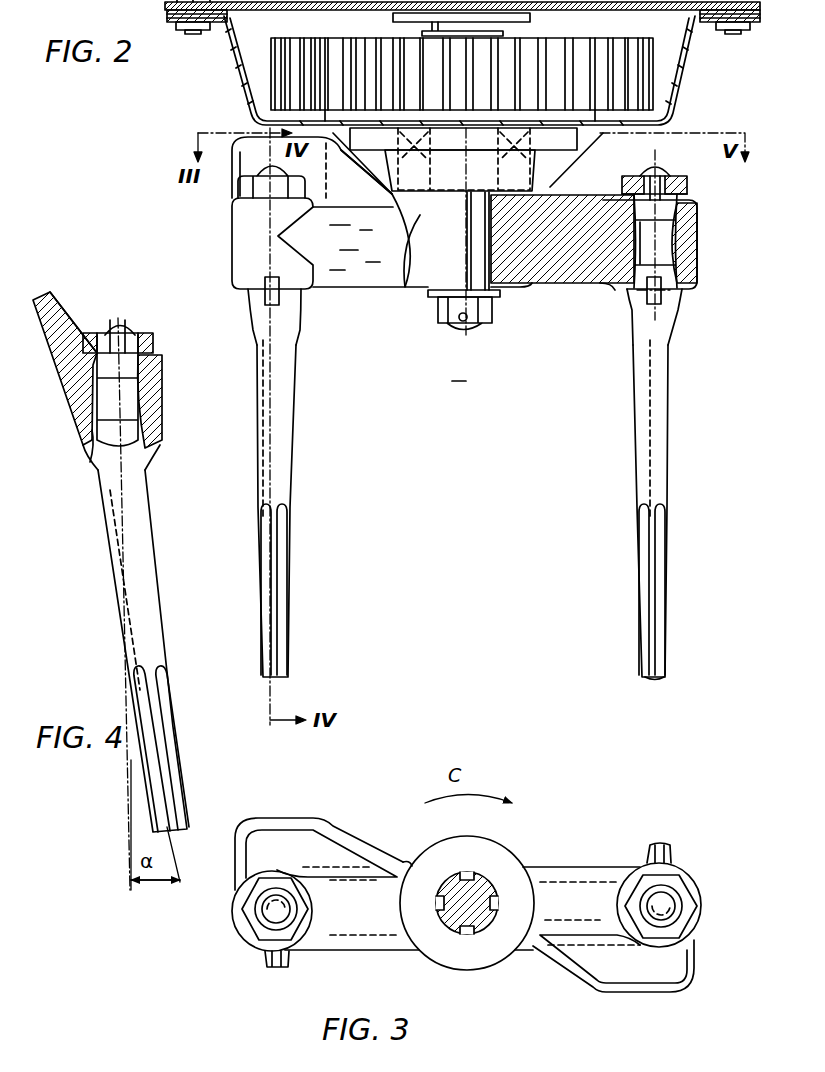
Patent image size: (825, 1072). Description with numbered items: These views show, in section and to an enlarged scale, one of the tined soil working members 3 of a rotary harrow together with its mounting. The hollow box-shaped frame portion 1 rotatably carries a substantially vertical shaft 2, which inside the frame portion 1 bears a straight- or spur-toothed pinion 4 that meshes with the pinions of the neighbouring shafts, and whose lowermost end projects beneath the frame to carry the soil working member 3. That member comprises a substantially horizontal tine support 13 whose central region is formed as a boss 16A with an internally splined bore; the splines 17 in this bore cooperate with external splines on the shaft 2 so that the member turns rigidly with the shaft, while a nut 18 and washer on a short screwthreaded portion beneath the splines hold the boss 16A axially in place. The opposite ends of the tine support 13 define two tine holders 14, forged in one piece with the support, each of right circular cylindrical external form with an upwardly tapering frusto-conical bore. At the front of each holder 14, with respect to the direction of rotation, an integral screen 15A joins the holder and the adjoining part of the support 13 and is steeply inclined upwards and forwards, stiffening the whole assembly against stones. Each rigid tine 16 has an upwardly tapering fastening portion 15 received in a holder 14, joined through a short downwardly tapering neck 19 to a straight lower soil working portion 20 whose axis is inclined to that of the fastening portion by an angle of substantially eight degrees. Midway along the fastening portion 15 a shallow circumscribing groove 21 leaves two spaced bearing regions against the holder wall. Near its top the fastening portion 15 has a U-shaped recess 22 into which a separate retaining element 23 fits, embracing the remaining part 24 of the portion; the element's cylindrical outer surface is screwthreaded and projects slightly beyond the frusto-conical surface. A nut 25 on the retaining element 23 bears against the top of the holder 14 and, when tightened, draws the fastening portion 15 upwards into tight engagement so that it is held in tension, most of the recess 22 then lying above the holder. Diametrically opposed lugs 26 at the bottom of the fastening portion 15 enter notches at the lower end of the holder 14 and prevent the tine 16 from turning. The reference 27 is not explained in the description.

In FIG. 2, the frame portion 1 is at (224, 50).
In FIG. 2, the shaft 2 is at (422, 32).
In FIG. 2, the soil working member 3 is at (459, 372).
In FIG. 2, the pinion 4 is at (638, 55).
In FIG. 2, the tine support 13 is at (362, 277).
In FIG. 3, the tine support 13 is at (578, 872).
In FIG. 2, the tine holder 14 is at (233, 244).
In FIG. 3, the tine holder 14 is at (668, 872).
In FIG. 2, the fastening portion 15 is at (663, 208).
In FIG. 2, the screen 15A is at (248, 152).
In FIG. 4, the screen 15A is at (40, 295).
In FIG. 3, the screen 15A is at (315, 836).
In FIG. 2, the tine 16 is at (634, 478).
In FIG. 3, the tine 16 is at (666, 846).
In FIG. 2, the boss 16A is at (500, 295).
In FIG. 3, the boss 16A is at (496, 862).
In FIG. 2, the splines 17 is at (475, 232).
In FIG. 3, the splines 17 is at (462, 868).
In FIG. 2, the nut 18 is at (440, 315).
In FIG. 2, the neck 19 is at (678, 302).
In FIG. 4, the neck 19 is at (86, 460).
In FIG. 2, the soil working portion 20 is at (292, 416).
In FIG. 4, the soil working portion 20 is at (112, 565).
In FIG. 2, the groove 21 is at (668, 256).
In FIG. 4, the groove 21 is at (145, 400).
In FIG. 4, the recess 22 is at (92, 332).
In FIG. 2, the retaining element 23 is at (668, 182).
In FIG. 4, the retaining element 23 is at (100, 330).
In FIG. 2, the part 24 is at (655, 172).
In FIG. 2, the nut 25 is at (240, 189).
In FIG. 4, the nut 25 is at (150, 334).
In FIG. 3, the nut 25 is at (256, 920).
In FIG. 2, the lug 26 is at (268, 296).
In FIG. 4, the lug 26 is at (152, 448).
In FIG. 2, the tine prong 27 is at (268, 602).
In FIG. 4, the tine prong 27 is at (158, 806).